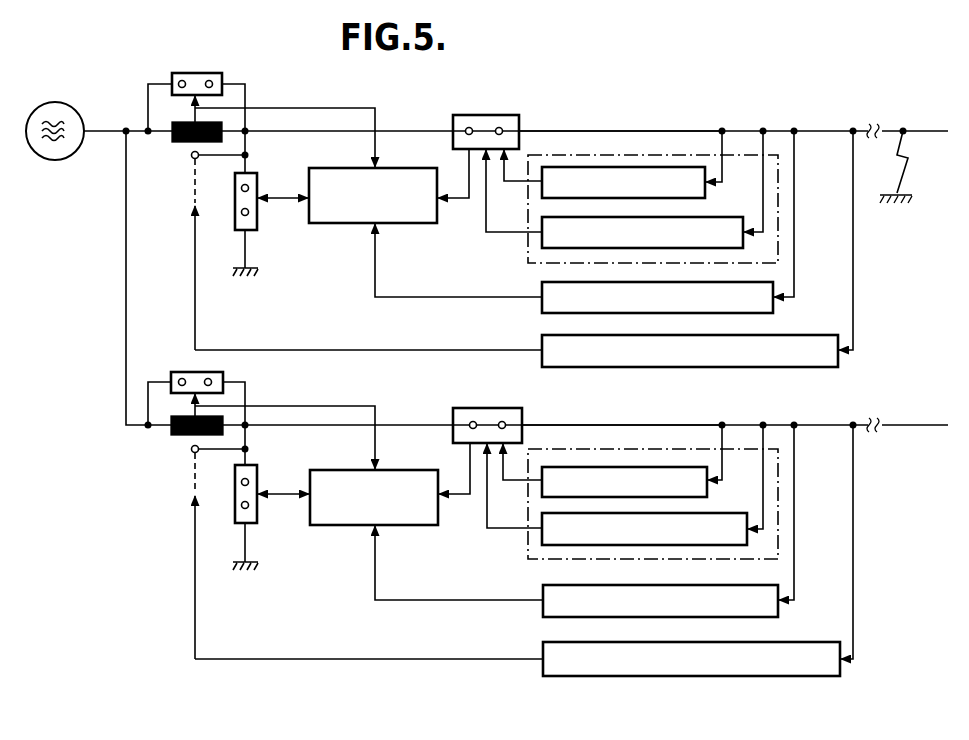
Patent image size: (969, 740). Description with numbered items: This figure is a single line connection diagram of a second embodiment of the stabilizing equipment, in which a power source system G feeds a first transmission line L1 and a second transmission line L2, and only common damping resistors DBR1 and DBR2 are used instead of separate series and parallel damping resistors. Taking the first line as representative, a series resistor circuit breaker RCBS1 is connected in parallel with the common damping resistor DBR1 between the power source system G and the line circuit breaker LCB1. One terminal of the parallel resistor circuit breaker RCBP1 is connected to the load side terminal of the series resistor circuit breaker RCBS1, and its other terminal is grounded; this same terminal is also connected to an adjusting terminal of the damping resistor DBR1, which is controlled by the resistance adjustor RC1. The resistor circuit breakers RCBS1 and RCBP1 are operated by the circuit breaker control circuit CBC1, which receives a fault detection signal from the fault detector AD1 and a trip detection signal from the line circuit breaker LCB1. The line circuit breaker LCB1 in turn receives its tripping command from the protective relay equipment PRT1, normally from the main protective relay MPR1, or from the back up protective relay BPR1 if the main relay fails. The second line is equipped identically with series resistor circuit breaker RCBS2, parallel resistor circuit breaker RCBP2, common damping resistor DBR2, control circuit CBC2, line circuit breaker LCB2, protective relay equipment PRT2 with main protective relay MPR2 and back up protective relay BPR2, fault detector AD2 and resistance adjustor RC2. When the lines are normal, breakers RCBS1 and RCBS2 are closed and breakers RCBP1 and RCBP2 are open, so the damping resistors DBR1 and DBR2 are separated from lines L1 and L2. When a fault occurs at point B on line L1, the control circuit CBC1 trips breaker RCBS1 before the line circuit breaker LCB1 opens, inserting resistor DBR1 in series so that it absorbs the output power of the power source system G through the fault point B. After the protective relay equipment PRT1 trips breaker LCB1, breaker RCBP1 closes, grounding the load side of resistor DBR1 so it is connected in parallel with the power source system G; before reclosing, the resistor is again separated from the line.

The power source system G is at (55, 161).
The fault point B is at (896, 152).
The series resistor circuit breaker RCBS1 is at (196, 62).
The series resistor circuit breaker RCBS2 is at (205, 372).
The parallel resistor circuit breaker RCBP1 is at (257, 226).
The parallel resistor circuit breaker RCBP2 is at (253, 523).
The common damping resistor DBR1 is at (182, 142).
The common damping resistor DBR2 is at (182, 435).
The circuit breaker control circuit CBC1 is at (344, 223).
The circuit breaker control circuit CBC2 is at (343, 525).
The line circuit breaker LCB1 is at (492, 115).
The line circuit breaker LCB2 is at (487, 408).
The main protective relay MPR1 is at (567, 167).
The main protective relay MPR2 is at (673, 467).
The back up protective relay BPR1 is at (540, 240).
The back up protective relay BPR2 is at (545, 548).
The first transmission line L1 is at (627, 130).
The second transmission line L2 is at (655, 423).
The protective relay equipment PRT1 is at (663, 155).
The protective relay equipment PRT2 is at (560, 449).
The fault detector AD1 is at (537, 312).
The fault detector AD2 is at (543, 618).
The resistance adjustor RC1 is at (778, 335).
The resistance adjustor RC2 is at (773, 642).